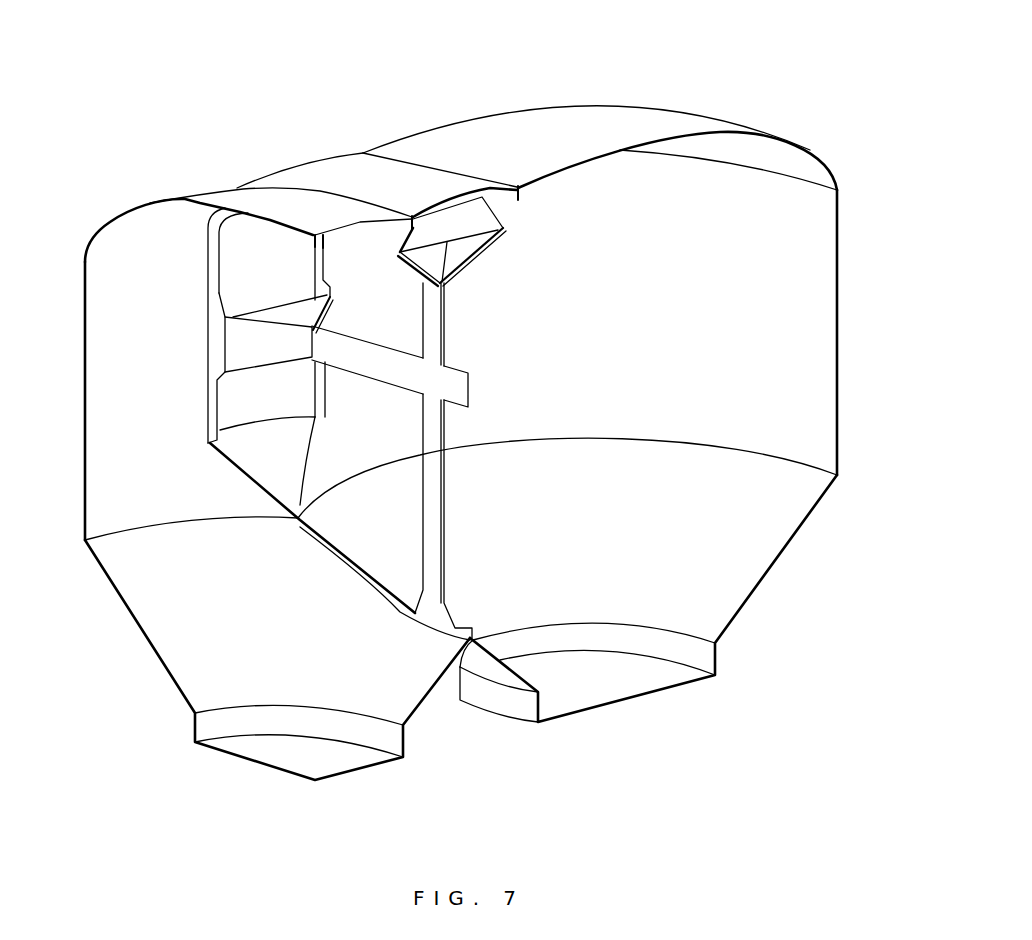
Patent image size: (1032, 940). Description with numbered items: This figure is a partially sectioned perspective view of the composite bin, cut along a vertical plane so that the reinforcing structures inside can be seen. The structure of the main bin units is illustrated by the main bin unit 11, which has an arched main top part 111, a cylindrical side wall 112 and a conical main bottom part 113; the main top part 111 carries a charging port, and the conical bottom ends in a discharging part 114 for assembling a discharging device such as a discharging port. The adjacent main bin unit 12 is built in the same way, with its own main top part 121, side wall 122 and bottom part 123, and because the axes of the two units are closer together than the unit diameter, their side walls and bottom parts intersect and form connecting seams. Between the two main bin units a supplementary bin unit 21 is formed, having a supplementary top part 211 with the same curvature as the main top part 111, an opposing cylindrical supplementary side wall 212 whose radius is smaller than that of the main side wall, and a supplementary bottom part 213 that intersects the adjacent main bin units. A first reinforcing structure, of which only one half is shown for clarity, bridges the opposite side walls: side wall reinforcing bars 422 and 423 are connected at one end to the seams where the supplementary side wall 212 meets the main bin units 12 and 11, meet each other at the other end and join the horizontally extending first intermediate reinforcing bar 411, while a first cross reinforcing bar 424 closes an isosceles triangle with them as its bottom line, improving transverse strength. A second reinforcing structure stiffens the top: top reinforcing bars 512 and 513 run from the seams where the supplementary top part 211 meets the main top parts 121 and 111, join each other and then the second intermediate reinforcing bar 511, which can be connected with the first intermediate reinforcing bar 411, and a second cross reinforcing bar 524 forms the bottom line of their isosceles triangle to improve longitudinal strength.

The main bin unit 11 is at (736, 91).
The main top part 111 is at (805, 173).
The cylindrical side wall 112 is at (805, 288).
The conical main bottom part 113 is at (760, 533).
The discharging part 114 is at (695, 650).
The main bin unit 12 is at (154, 177).
The main top part 121 is at (222, 200).
The side wall of second body 122 is at (107, 402).
The tapered bottom portion of second body 123 is at (168, 620).
The supplementary bin unit 21 is at (297, 135).
The supplementary top part 211 is at (334, 173).
The supplementary side wall 212 is at (243, 265).
The supplementary bottom part 213 is at (272, 460).
The first intermediate reinforcing bar 411 is at (372, 365).
The side wall reinforcing bar 422 is at (257, 345).
The side wall reinforcing bar 423 is at (325, 312).
The first cross reinforcing bar 424 is at (292, 310).
The second intermediate reinforcing bar 511 is at (430, 336).
The top reinforcing bar 512 is at (403, 258).
The top reinforcing bar 513 is at (453, 255).
The second cross reinforcing bar 524 is at (468, 215).